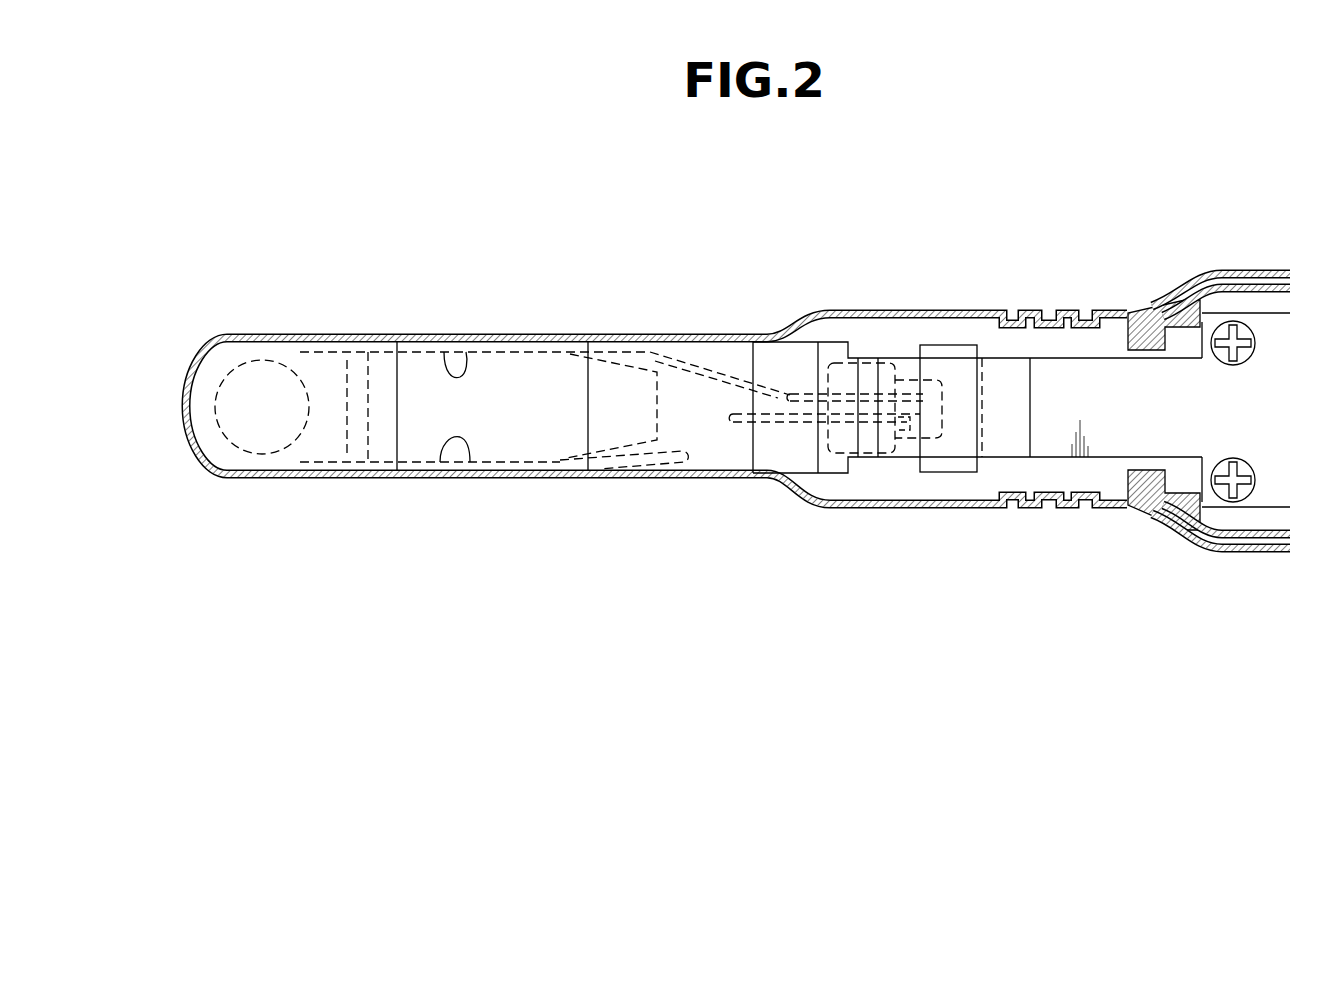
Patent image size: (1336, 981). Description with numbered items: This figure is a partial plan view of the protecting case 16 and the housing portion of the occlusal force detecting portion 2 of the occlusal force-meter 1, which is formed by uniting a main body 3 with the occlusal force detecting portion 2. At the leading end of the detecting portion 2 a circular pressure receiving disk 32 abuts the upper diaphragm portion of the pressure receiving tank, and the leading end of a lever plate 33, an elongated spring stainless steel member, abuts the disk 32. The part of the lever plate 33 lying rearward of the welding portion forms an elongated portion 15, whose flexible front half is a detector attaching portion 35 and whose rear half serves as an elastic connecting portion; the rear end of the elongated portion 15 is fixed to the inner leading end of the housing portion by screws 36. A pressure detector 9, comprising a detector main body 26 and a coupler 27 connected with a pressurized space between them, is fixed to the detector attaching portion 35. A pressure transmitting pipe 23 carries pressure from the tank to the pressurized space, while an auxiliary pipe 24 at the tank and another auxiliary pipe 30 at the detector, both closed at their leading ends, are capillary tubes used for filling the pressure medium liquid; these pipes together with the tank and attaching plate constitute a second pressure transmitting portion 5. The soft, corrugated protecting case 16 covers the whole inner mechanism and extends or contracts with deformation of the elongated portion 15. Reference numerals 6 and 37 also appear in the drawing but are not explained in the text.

The occlusal force-meter 1 is at (1068, 233).
The occlusal force detecting portion 2 is at (638, 310).
The main body 3 is at (1255, 563).
The second pressure transmitting portion 5 is at (718, 368).
The distal end portion 6 is at (268, 326).
The pressure detector 9 is at (870, 470).
The elongated portion 15 is at (1030, 458).
The protecting case 16 is at (865, 312).
The pressure transmitting pipe 23 is at (488, 340).
The auxiliary pipe 24 is at (468, 462).
The detector main body 26 is at (897, 372).
The coupler 27 is at (843, 452).
The auxiliary pipe 30 is at (740, 430).
The pressure receiving disk 32 is at (262, 455).
The lever plate 33 is at (800, 472).
The detector attaching portion 35 is at (905, 460).
The screws 36 is at (1212, 312).
The bellows 37 is at (1065, 507).